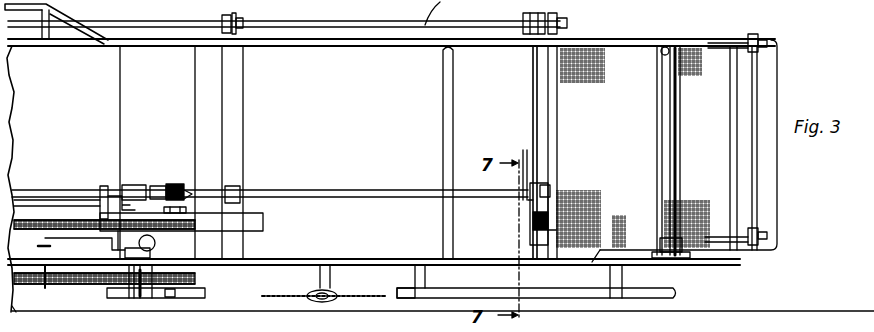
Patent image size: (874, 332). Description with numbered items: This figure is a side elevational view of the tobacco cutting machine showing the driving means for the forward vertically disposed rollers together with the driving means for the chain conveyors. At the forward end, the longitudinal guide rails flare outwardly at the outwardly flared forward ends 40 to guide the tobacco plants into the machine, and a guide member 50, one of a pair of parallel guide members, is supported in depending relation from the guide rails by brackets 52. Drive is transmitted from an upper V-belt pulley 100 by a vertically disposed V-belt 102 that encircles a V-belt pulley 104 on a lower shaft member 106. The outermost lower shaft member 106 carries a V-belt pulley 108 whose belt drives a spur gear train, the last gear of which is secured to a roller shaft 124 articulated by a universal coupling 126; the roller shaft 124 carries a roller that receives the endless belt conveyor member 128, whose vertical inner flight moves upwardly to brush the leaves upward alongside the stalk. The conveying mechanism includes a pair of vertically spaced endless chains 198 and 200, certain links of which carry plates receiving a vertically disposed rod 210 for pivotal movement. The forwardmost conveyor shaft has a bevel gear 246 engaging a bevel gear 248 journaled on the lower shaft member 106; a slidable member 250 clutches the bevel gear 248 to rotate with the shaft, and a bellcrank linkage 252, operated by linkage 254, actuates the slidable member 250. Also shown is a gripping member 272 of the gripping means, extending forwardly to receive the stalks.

The outwardly flared forward ends 40 is at (738, 273).
The guide member 50 is at (583, 283).
The bracket 52 is at (616, 287).
The V-belt pulley 100 is at (530, 201).
The V-belt 102 is at (536, 126).
The V-belt pulley 104 is at (523, 150).
The lower shaft member 106 is at (332, 191).
The V-belt pulley 108 is at (548, 188).
The roller shaft 124 is at (667, 261).
The universal coupling 126 is at (676, 241).
The endless belt conveyor member 128 is at (687, 50).
The endless chain 198 is at (27, 220).
The endless chain 200 is at (70, 287).
The vertically disposed rod 210 is at (52, 250).
The bevel gear 246 is at (182, 193).
The bevel gear 248 is at (167, 197).
The slidable member 250 is at (132, 189).
The bellcrank linkage 252 is at (117, 192).
The linkage 254 is at (103, 207).
The gripping member 272 is at (195, 293).